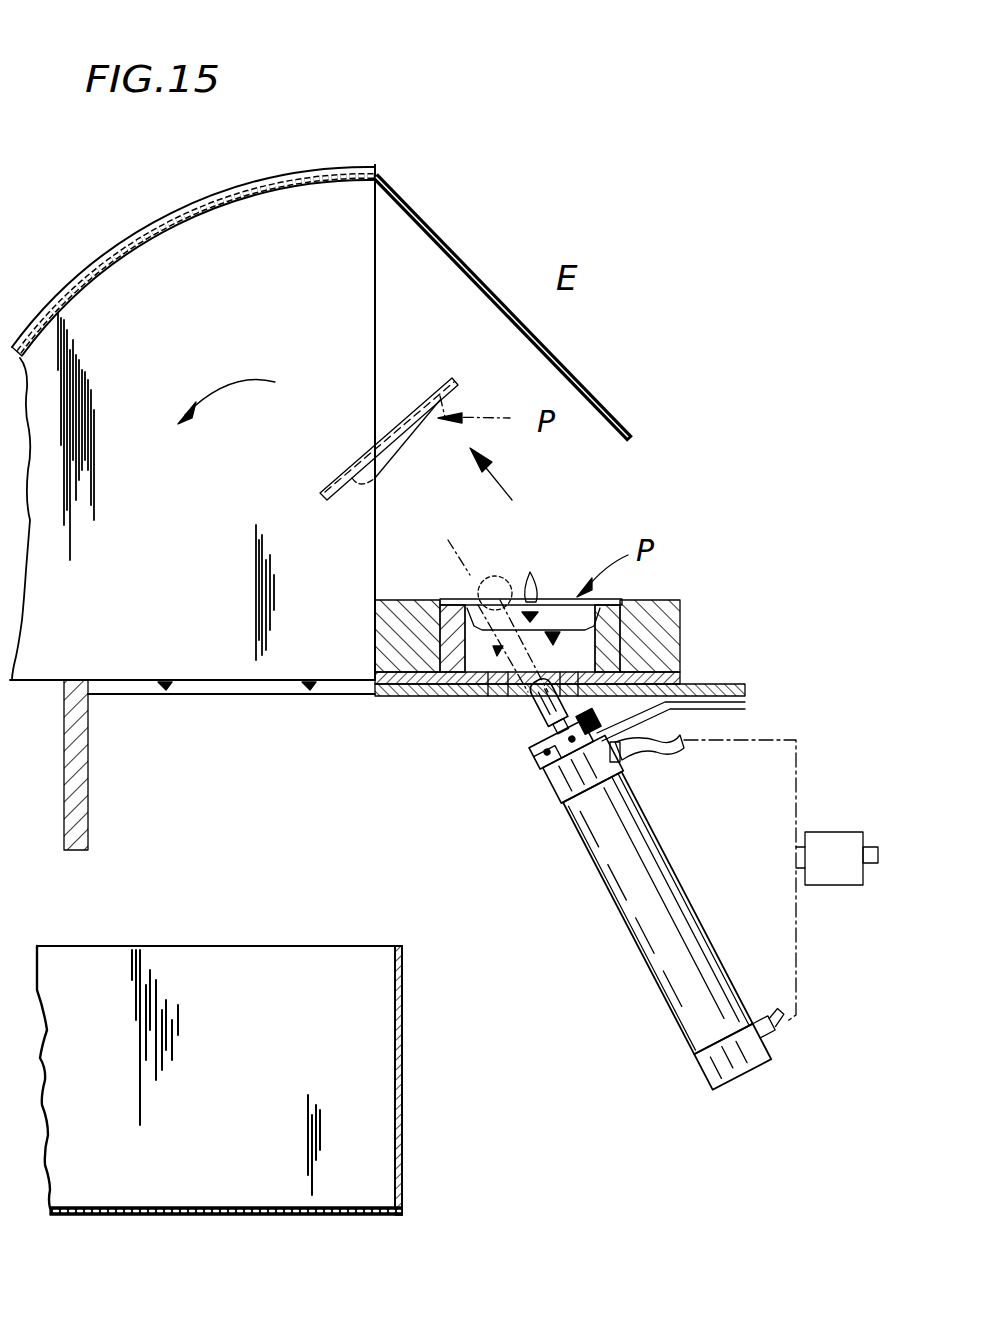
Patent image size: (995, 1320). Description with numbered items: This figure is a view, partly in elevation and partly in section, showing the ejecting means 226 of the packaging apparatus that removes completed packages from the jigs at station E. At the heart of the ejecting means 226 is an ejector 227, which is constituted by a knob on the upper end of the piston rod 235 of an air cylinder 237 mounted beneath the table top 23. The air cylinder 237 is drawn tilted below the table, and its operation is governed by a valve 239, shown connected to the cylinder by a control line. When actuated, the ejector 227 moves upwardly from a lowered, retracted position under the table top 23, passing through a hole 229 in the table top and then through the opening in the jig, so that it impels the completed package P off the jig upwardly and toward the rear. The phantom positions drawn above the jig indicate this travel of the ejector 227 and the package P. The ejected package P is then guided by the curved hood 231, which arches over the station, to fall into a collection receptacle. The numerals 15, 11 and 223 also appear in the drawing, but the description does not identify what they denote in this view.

The hood 231 is at (140, 228).
The ejecting means 226 is at (660, 172).
The ejector 227 is at (466, 570).
The nozzle tip 15 is at (530, 578).
The die block assembly 11 is at (612, 600).
The table top 23 is at (745, 690).
The hole 229 is at (505, 697).
The piston rod 235 is at (548, 735).
The air cylinder 237 is at (630, 940).
The valve 239 is at (852, 876).
The container 223 is at (402, 1108).